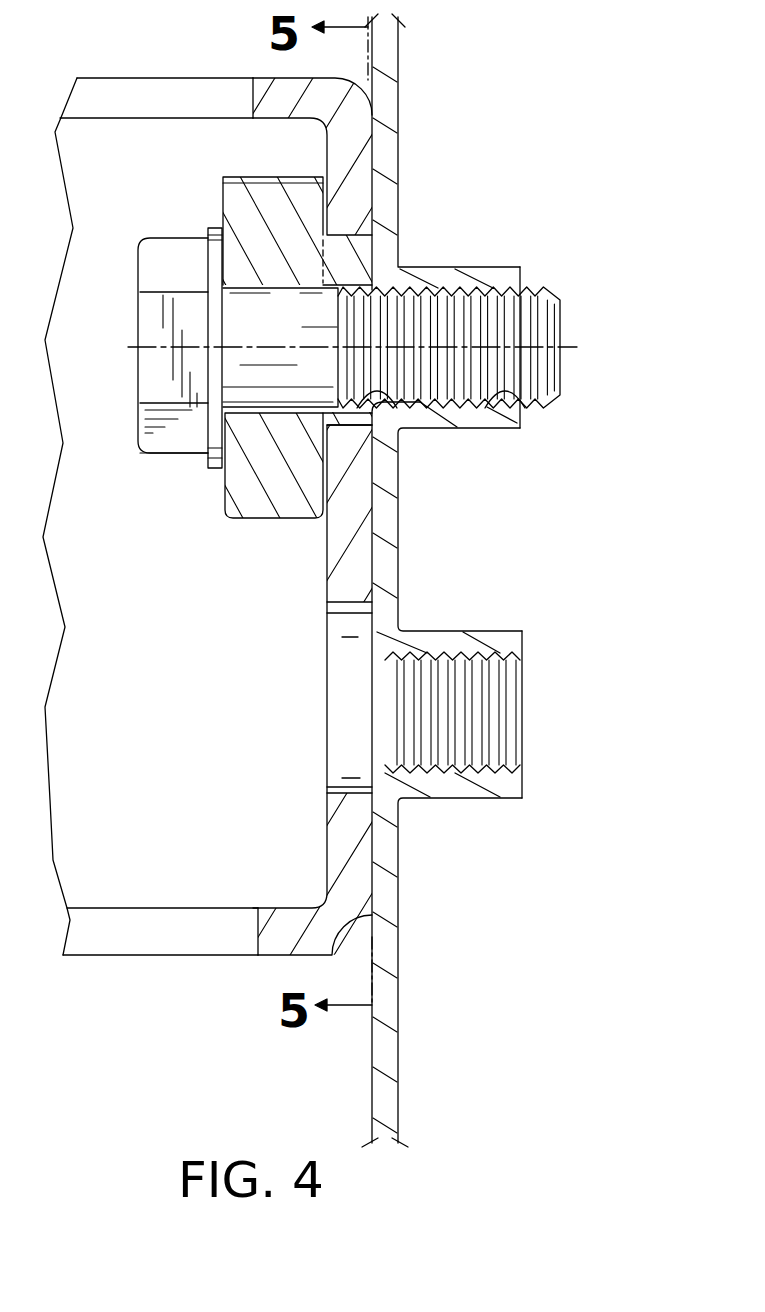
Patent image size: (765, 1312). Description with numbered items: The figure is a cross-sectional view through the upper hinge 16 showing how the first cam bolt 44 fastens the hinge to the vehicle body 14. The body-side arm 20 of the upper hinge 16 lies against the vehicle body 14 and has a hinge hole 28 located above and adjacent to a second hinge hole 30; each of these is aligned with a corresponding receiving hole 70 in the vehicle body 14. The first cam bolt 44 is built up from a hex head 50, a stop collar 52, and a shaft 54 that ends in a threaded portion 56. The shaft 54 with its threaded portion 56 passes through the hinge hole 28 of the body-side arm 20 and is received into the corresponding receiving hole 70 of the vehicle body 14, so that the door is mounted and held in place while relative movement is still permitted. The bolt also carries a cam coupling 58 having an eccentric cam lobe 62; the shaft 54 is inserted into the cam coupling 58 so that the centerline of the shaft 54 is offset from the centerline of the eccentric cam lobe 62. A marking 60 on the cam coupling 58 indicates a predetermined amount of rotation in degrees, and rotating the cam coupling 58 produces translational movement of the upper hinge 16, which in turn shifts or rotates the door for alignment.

The vehicle body 14 is at (372, 1083).
The upper hinge 16 is at (148, 957).
The body-side arm 20 is at (358, 170).
The hinge hole 28 is at (413, 402).
The hinge hole 30 is at (347, 603).
The first cam bolt 44 is at (160, 457).
The hex head 50 is at (155, 257).
The stop collar 52 is at (213, 230).
The shaft 54 is at (267, 380).
The threaded portion 56 is at (502, 332).
The cam coupling 58 is at (253, 508).
The marking 60 is at (240, 177).
The eccentric cam lobe 62 is at (362, 247).
The receiving hole 70 is at (545, 410).